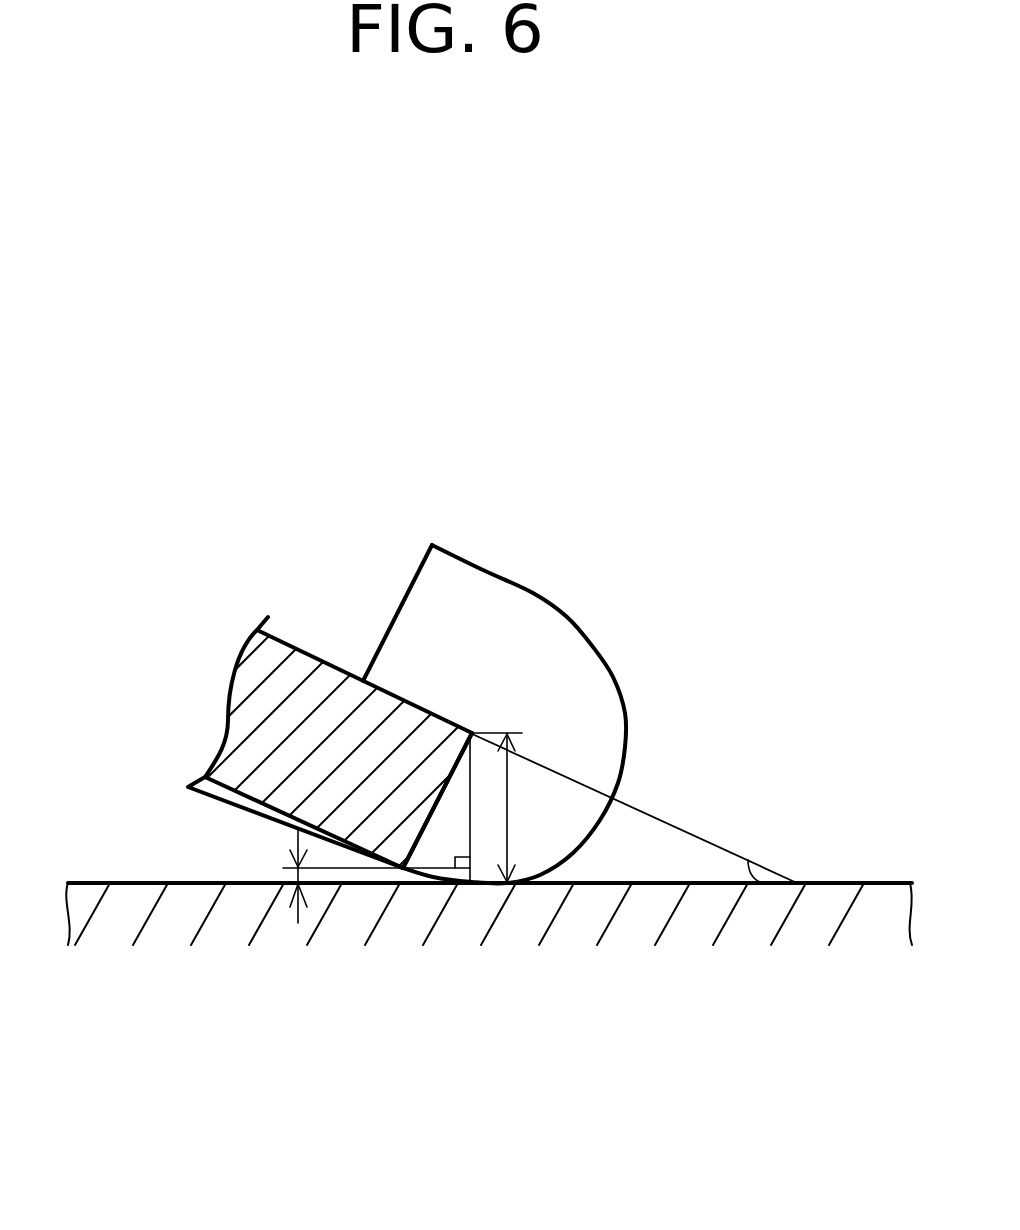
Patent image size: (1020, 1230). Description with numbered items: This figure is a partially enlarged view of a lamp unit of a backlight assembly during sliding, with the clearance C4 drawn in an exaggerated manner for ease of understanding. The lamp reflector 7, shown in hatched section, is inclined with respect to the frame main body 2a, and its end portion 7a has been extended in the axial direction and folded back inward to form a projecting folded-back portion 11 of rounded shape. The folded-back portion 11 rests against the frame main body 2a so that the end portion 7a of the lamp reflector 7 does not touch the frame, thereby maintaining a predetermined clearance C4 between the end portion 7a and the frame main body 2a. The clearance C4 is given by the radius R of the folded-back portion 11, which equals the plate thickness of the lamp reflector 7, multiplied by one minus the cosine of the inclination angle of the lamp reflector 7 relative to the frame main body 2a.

The frame main body 2a is at (825, 908).
The lamp reflector 7 is at (247, 697).
The end portion of the lamp reflector 7a is at (428, 828).
The folded-back portion 11 is at (515, 618).
The radius of the folded-back portion R is at (508, 812).
The predetermined clearance C4 is at (293, 877).